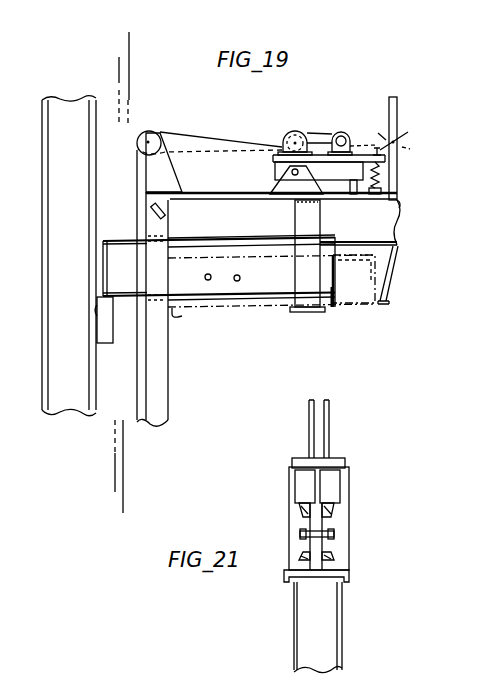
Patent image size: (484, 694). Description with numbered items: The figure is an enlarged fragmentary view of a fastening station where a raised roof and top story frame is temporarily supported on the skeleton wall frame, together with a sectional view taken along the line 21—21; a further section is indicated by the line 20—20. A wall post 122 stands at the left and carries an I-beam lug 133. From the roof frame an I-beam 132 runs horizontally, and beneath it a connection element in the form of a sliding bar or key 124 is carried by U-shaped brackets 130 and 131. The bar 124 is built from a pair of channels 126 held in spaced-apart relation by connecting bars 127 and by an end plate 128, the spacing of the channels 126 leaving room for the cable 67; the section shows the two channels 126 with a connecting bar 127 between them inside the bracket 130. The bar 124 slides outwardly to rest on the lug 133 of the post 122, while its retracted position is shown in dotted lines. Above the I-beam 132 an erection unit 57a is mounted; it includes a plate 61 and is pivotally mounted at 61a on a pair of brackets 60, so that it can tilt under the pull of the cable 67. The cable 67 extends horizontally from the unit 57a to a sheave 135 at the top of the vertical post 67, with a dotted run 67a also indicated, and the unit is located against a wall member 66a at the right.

In FIG. 19, the section line 20— 20 is at (133, 38).
In FIG. 19, the section line 21— 21 is at (115, 67).
In FIG. 19, the erection unit 57a is at (288, 123).
In FIG. 19, the brackets 60 is at (288, 178).
In FIG. 19, the plate 61 is at (349, 163).
In FIG. 19, the pivotal mounting 61a is at (293, 171).
In FIG. 19, the wall post 66a is at (388, 112).
In FIG. 19, the cable 67 is at (152, 432).
In FIG. 19, the cable 67a is at (204, 153).
In FIG. 19, the wall post 122 is at (70, 417).
In FIG. 19, the sliding bar or key 124 is at (232, 289).
In FIG. 19, the channels 126 is at (110, 239).
In FIG. 21, the channels 126 is at (299, 524).
In FIG. 19, the connecting bars 127 is at (210, 274).
In FIG. 21, the connecting bars 127 is at (335, 538).
In FIG. 19, the end plate 128 is at (343, 294).
In FIG. 19, the U-shaped bracket 130 is at (168, 327).
In FIG. 21, the U-shaped bracket 130 is at (334, 558).
In FIG. 19, the U-shaped bracket 131 is at (303, 294).
In FIG. 19, the I-beam 132 is at (247, 222).
In FIG. 19, the I-beam lug 133 is at (97, 348).
In FIG. 19, the sheave 135 is at (160, 131).
In FIG. 21, the sheave 135 is at (323, 399).